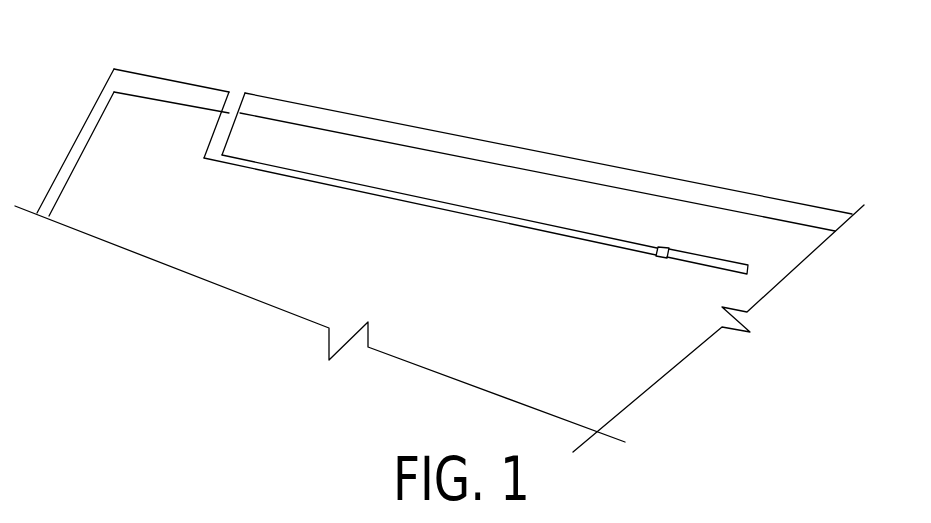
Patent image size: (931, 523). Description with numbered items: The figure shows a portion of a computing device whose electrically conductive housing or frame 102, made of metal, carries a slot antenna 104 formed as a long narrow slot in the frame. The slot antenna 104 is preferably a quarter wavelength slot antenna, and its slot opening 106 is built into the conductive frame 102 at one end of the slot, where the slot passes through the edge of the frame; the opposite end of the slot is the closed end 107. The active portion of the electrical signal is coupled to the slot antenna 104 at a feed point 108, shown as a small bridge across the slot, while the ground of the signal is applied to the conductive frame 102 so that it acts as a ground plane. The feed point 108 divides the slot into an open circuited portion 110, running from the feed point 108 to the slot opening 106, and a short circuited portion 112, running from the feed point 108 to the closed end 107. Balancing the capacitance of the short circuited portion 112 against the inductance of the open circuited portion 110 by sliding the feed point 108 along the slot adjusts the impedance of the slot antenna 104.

The electrically conductive housing or frame 102 is at (172, 80).
The slot antenna 104 is at (213, 148).
The slot opening 106 is at (238, 92).
The closed end 107 is at (750, 263).
The feed point 108 is at (662, 246).
The open circuited portion 110 is at (195, 165).
The short circuited portion 112 is at (750, 273).